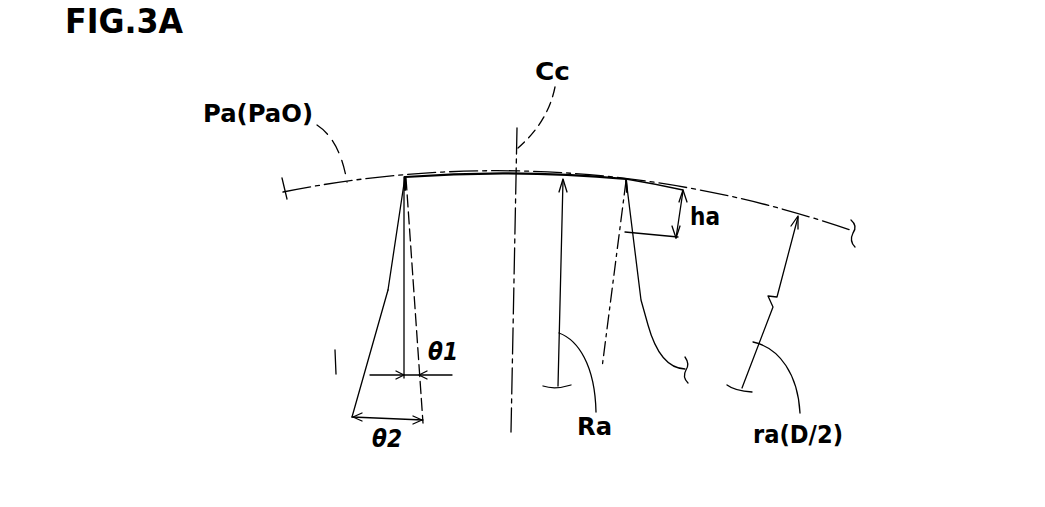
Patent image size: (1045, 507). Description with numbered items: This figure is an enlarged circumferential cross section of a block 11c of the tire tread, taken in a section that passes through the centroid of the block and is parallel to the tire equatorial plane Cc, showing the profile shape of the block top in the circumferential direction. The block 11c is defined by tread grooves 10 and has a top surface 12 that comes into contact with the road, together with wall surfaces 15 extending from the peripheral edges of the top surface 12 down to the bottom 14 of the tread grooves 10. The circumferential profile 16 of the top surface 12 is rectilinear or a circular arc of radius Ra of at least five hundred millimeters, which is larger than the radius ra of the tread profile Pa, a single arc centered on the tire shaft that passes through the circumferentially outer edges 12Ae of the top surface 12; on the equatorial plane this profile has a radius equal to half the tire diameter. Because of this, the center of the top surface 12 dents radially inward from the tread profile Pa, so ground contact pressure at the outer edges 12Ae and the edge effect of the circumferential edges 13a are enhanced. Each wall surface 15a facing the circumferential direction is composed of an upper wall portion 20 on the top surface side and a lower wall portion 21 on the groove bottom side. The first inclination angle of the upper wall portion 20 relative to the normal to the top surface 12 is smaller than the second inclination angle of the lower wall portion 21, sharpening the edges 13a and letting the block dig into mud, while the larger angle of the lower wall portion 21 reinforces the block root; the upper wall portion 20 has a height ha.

The top surface 12 is at (515, 107).
The circumferential profile 16 is at (480, 172).
The circumferential edges 13a is at (525, 130).
The circumferentially outer edges 12Ae is at (405, 172).
The block 11c is at (490, 242).
The wall surfaces 15 is at (275, 297).
The wall surfaces facing in the circumferential direction 15a is at (275, 297).
The upper wall portion 20 is at (403, 205).
The lower wall portion 21 is at (380, 293).
The bottom 14 is at (260, 350).
The tread grooves 10 is at (340, 360).